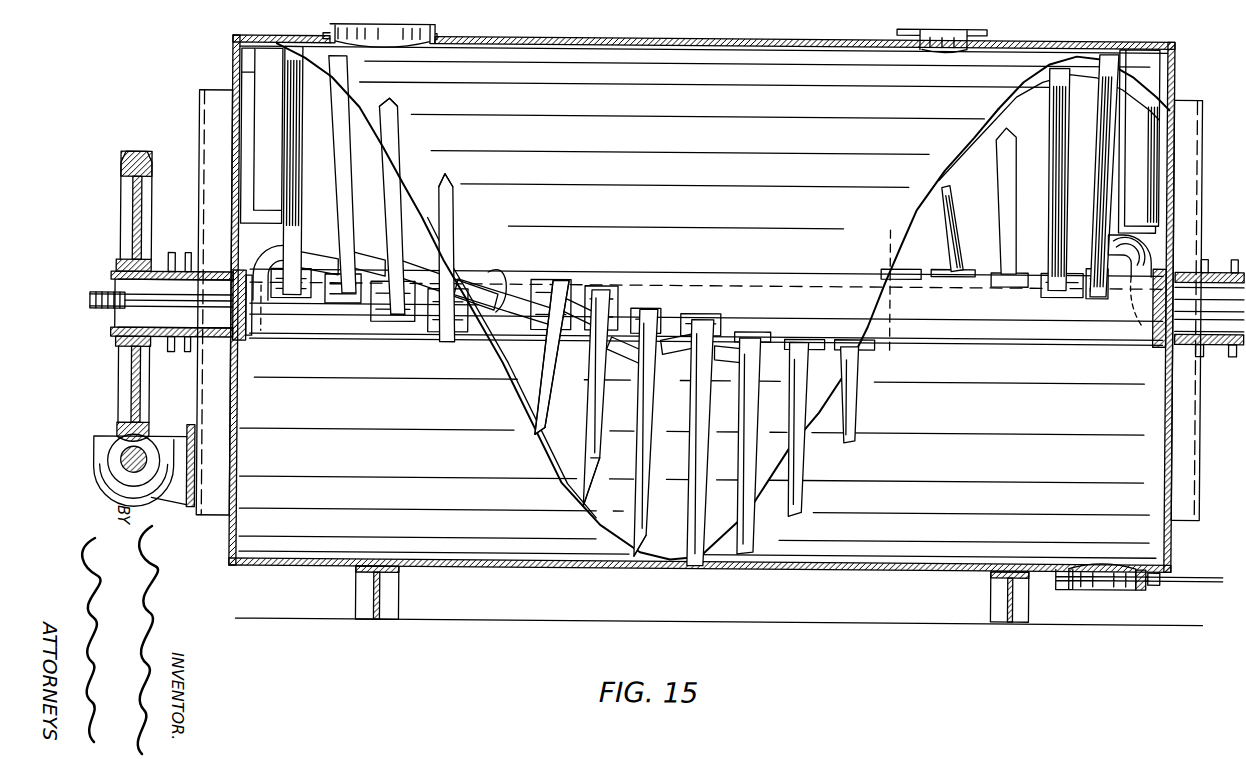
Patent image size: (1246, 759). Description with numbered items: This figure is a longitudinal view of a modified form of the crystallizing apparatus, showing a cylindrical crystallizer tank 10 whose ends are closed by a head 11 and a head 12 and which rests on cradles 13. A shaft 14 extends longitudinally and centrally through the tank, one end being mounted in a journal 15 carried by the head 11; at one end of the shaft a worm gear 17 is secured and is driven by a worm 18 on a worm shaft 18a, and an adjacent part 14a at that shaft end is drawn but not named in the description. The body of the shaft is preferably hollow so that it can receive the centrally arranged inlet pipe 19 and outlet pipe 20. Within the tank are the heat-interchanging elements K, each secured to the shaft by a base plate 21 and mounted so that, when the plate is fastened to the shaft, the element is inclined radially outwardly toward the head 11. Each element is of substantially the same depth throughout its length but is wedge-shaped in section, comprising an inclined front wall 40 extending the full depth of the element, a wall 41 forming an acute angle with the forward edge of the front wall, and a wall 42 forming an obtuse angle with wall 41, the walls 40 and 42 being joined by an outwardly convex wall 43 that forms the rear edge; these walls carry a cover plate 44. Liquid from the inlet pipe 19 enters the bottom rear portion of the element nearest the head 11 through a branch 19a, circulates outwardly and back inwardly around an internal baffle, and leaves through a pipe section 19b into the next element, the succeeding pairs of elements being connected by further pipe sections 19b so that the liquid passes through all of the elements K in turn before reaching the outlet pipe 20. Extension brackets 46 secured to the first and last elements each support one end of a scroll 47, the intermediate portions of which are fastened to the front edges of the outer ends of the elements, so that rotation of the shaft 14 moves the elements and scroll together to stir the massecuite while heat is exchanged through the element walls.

The crystallizer tank 10 is at (811, 44).
The head 11 is at (233, 47).
The head 12 is at (1178, 86).
The cradles 13 is at (403, 592).
The shaft 14 is at (731, 280).
The upright post 14a is at (116, 268).
The journal 15 is at (213, 343).
The worm gear 17 is at (118, 383).
The worm 18 is at (108, 487).
The worm shaft 18a is at (124, 460).
The inlet pipe 19 is at (97, 303).
The branch 19a is at (266, 253).
The pipe section 19b is at (1041, 259).
The outlet pipe 20 is at (1142, 248).
The base plate 21 is at (302, 292).
The inclined front wall 40 is at (503, 196).
The wall 41 is at (437, 188).
The wall 42 is at (442, 176).
The outwardly convex wall 43 is at (410, 88).
The cover plate 44 is at (400, 109).
The extension brackets 46 is at (250, 173).
The scroll 47 is at (356, 108).
The heat-interchanging elements K is at (295, 150).